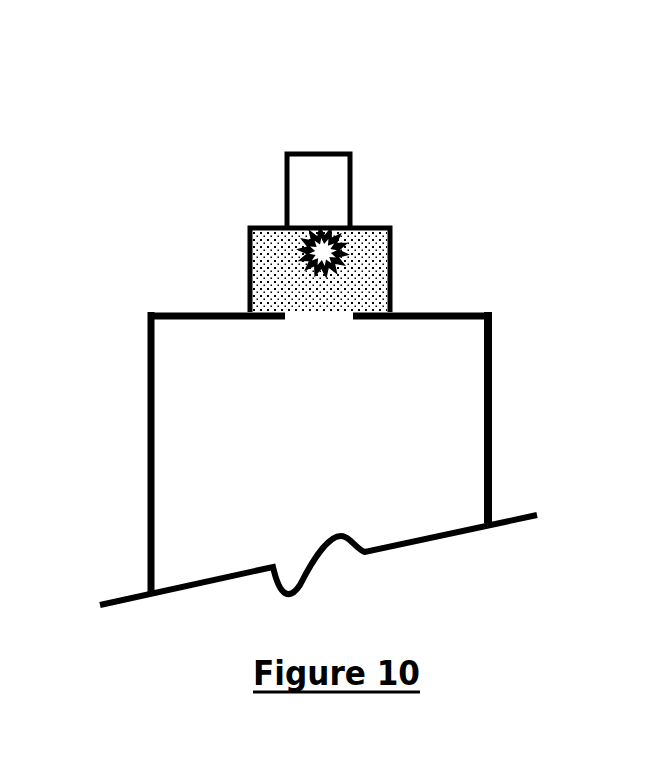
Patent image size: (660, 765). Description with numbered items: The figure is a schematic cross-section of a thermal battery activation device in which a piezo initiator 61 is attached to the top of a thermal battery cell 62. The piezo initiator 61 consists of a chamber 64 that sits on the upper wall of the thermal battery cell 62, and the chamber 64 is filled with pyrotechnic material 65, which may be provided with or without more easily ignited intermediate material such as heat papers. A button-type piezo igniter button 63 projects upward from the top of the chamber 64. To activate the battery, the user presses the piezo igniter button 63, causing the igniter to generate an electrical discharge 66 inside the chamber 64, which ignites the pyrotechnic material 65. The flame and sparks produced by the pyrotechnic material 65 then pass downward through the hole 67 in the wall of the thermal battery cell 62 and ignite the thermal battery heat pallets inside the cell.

The piezo initiator 61 is at (500, 240).
The thermal battery cell 62 is at (138, 442).
The piezo igniter button 63 is at (363, 155).
The chamber 64 is at (236, 252).
The pyrotechnic material 65 is at (273, 290).
The electrical discharge 66 is at (365, 252).
The hole 67 is at (316, 334).